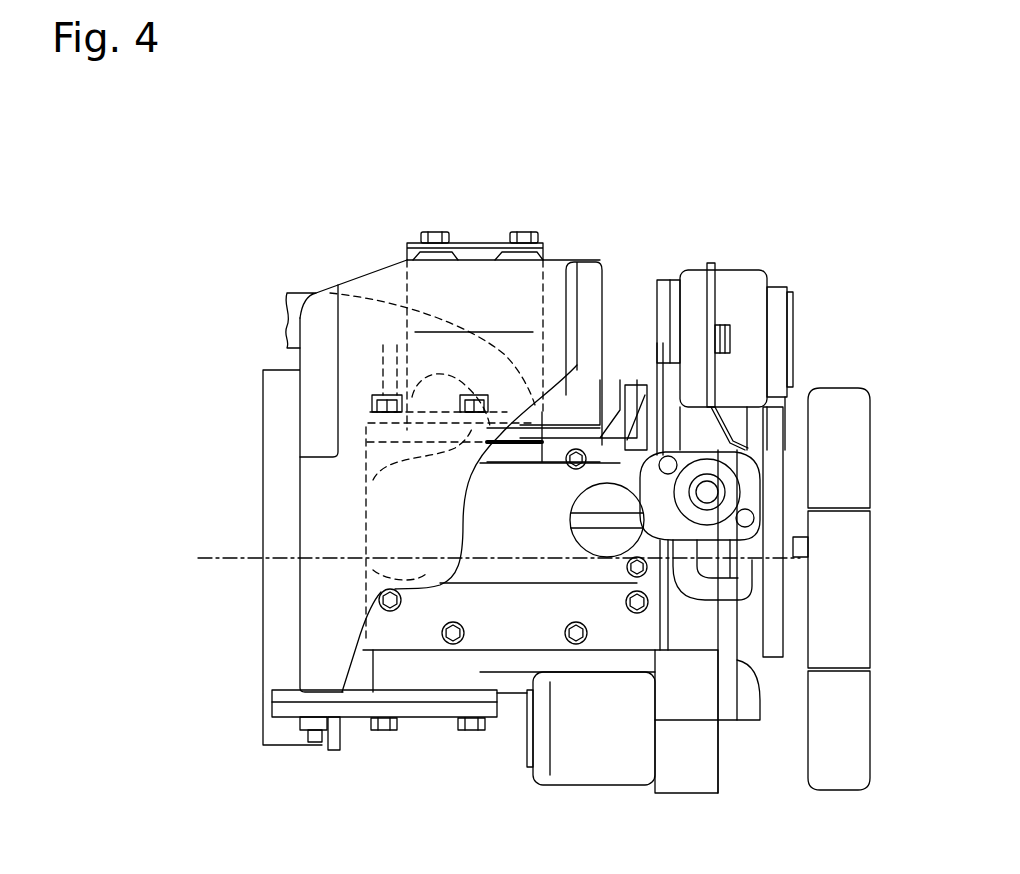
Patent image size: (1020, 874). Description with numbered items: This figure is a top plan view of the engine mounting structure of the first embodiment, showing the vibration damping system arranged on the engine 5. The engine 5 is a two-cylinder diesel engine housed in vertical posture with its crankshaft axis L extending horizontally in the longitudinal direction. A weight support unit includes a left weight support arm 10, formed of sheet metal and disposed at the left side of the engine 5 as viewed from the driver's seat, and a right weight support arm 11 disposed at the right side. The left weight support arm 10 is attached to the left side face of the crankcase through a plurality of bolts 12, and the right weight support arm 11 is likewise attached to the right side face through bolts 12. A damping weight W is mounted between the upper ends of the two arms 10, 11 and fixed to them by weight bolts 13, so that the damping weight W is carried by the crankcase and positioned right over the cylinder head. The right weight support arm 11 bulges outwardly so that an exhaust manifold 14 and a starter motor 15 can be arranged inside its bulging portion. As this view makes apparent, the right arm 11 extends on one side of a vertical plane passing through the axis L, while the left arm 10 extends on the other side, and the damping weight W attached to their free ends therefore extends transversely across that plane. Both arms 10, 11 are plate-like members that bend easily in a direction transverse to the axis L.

The engine 5 is at (820, 304).
The left weight support arm 10 is at (356, 725).
The right weight support arm 11 is at (407, 247).
The bolts 12 is at (406, 368).
The weight bolts 13 is at (519, 230).
The exhaust manifold 14 is at (300, 300).
The starter motor 15 is at (594, 297).
The axis of the crankshaft L is at (222, 558).
The damping weight W is at (313, 640).